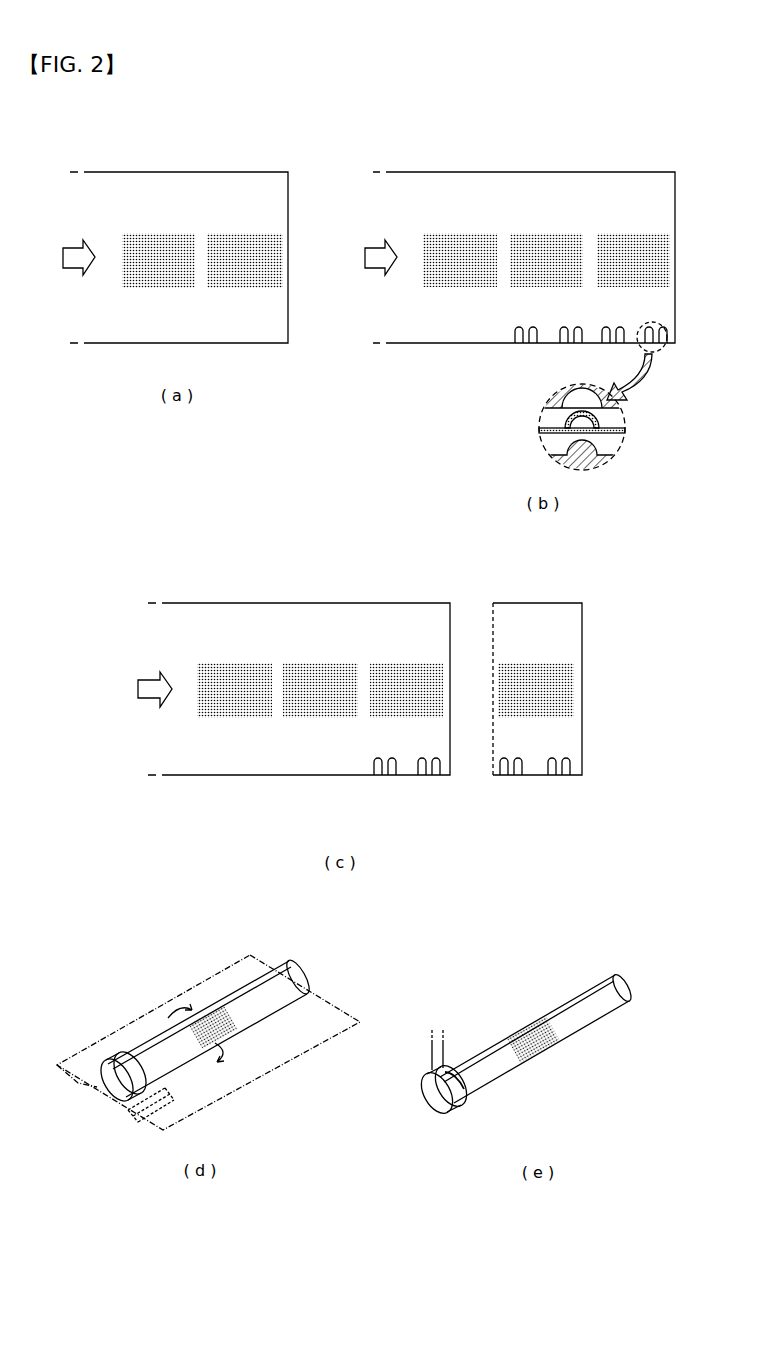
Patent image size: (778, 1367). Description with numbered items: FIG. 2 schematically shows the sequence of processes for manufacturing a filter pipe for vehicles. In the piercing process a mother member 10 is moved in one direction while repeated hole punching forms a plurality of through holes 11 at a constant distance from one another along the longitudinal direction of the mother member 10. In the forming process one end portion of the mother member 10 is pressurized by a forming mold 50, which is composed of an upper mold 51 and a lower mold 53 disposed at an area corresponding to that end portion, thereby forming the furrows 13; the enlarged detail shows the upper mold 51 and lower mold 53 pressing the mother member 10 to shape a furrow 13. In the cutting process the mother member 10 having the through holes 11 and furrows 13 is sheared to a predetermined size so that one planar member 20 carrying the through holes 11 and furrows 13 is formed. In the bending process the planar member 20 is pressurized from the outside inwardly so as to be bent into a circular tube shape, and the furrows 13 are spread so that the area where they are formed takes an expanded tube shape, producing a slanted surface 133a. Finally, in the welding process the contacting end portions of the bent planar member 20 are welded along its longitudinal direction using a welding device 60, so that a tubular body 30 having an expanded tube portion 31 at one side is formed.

The mother member 10 is at (126, 172).
The through holes 11 is at (229, 233).
The furrows 13 is at (527, 344).
The planar member 20 is at (505, 603).
The body 30 is at (563, 992).
The expanded tube portion 31 is at (457, 1115).
The forming mold 50 is at (537, 417).
The upper mold 51 is at (544, 402).
The lower mold 53 is at (546, 464).
The welding device 60 is at (444, 1046).
The slanted surface 133a is at (466, 1083).